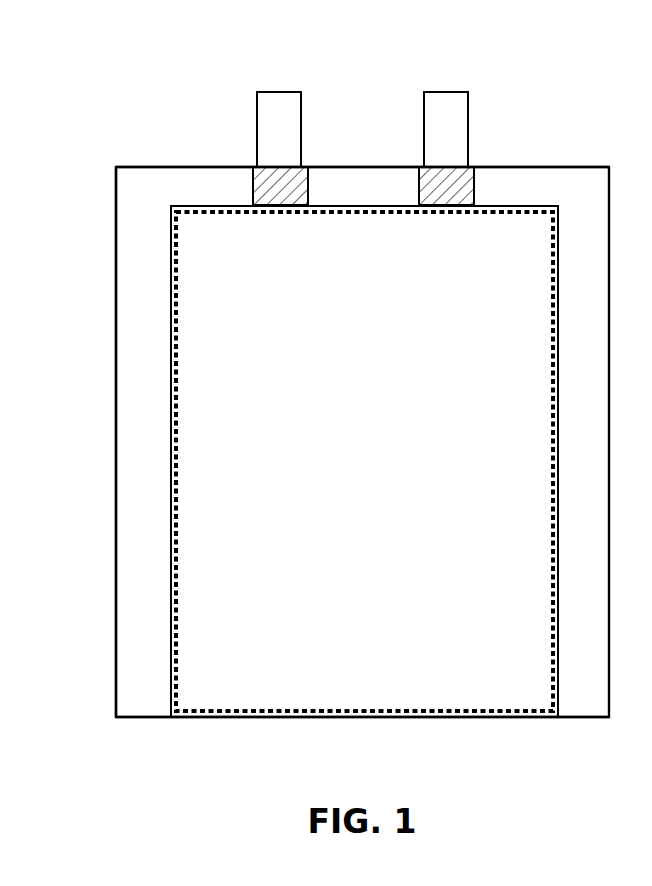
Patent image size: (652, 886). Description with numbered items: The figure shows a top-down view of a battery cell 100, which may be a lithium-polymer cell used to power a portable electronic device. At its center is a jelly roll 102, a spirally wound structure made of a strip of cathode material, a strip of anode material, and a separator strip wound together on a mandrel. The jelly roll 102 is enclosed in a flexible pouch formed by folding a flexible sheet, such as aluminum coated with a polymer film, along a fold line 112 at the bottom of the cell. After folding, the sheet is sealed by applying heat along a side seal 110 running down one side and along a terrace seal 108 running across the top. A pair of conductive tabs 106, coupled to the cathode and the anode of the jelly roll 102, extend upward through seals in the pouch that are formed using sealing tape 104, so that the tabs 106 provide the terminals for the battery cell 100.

The battery cell 100 is at (116, 165).
The jelly roll 102 is at (364, 461).
The sealing tape 104 is at (283, 207).
The conductive tabs 106 is at (432, 92).
The terrace seal 108 is at (503, 167).
The side seal 110 is at (116, 433).
The fold line 112 is at (435, 717).